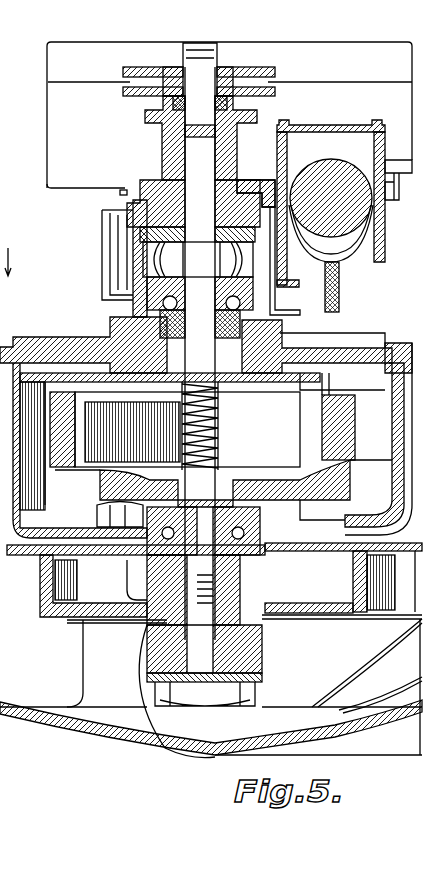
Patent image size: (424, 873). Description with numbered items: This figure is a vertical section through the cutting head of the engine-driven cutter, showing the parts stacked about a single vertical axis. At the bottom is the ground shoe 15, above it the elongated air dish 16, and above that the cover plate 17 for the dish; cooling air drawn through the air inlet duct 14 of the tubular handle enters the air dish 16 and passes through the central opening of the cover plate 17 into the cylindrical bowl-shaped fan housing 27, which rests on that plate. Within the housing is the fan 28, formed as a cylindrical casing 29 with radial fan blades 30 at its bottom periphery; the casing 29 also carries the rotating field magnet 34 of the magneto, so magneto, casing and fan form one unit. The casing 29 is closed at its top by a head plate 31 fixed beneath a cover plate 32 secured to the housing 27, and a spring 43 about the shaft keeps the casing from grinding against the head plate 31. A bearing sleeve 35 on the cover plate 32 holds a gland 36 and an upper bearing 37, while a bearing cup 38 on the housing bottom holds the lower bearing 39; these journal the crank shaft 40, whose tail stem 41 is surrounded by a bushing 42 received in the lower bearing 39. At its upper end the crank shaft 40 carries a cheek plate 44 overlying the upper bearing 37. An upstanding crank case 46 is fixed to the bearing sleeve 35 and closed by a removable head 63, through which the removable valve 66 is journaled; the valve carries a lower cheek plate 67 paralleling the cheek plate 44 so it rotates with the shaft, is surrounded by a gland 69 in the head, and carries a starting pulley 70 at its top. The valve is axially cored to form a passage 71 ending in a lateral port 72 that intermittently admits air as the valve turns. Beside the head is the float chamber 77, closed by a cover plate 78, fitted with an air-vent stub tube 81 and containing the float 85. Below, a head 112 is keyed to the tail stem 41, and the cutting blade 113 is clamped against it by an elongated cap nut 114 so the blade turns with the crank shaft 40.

The air inlet duct 14 is at (9, 255).
The ground shoe 15 is at (211, 688).
The air dish 16 is at (36, 618).
The cover plate 17 is at (353, 570).
The fan housing 27 is at (396, 462).
The fan 28 is at (362, 402).
The cylindrical casing 29 is at (322, 440).
The radial fan blades 30 is at (355, 505).
The head plate 31 is at (75, 380).
The cover plate 32 is at (36, 336).
The rotating field magnet 34 is at (76, 432).
The bearing sleeve 35 is at (150, 292).
The gland 36 is at (162, 322).
The upper bearing 37 is at (276, 290).
The bearing cup 38 is at (245, 476).
The lower bearing 39 is at (100, 514).
The crank shaft 40 is at (176, 374).
The tail stem 41 is at (242, 588).
The bushing 42 is at (240, 556).
The spring 43 is at (220, 424).
The cheek plate 44 is at (160, 262).
The crank case 46 is at (135, 226).
The removable head 63 is at (165, 138).
The removable valve 66 is at (219, 168).
The cheek plate 67 is at (148, 195).
The gland 69 is at (242, 100).
The starting pulley 70 is at (272, 70).
The passage 71 is at (186, 172).
The lateral port 72 is at (185, 150).
The float chamber 77 is at (370, 232).
The cover plate 78 is at (332, 127).
The air-vent stub tube 81 is at (402, 174).
The float 85 is at (335, 172).
The head 112 is at (258, 650).
The cutting blade 113 is at (262, 680).
The cap nut 114 is at (205, 703).